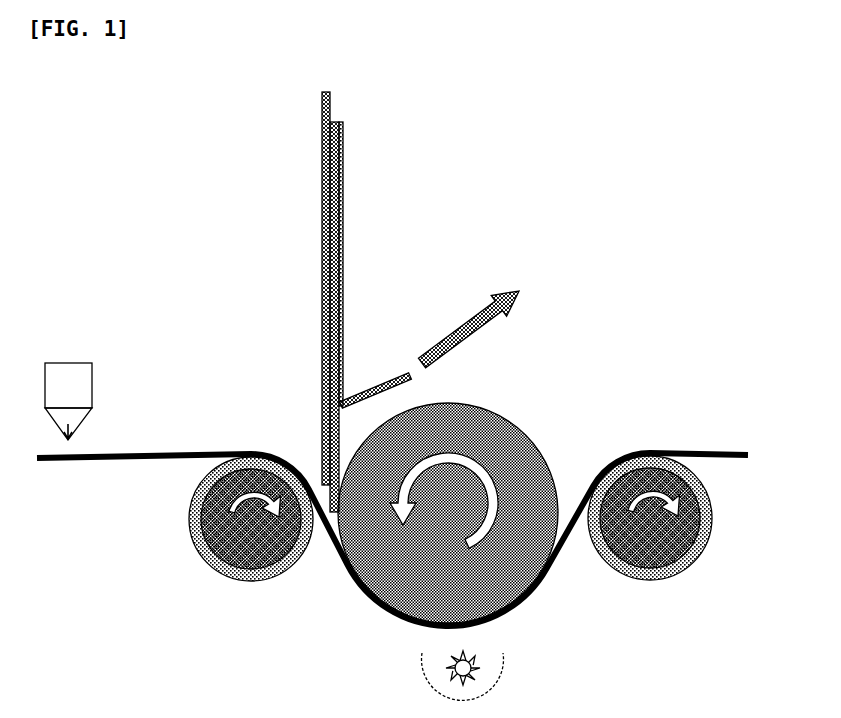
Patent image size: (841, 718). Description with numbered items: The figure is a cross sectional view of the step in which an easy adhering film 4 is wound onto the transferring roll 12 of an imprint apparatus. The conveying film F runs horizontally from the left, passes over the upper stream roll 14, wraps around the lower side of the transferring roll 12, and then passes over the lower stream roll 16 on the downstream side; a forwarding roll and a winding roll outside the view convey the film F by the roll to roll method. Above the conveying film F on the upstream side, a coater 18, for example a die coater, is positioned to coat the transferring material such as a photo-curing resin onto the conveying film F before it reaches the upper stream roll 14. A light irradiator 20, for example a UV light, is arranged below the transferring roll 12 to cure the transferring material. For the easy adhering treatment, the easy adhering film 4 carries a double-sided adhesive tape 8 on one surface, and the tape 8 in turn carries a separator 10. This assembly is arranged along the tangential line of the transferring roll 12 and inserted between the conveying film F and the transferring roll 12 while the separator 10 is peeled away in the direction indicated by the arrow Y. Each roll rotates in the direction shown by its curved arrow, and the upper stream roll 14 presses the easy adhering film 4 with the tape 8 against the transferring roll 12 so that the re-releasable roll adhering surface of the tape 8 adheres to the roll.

The easy adhering film 4 is at (328, 92).
The double-sided adhesive tape 8 is at (336, 123).
The separator 10 is at (343, 157).
The transferring roll 12 is at (470, 407).
The upper stream roll 14 is at (240, 557).
The lower stream roll 16 is at (670, 552).
The coater 18 is at (73, 363).
The light irradiator 20 is at (521, 677).
The conveying film F is at (118, 454).
The peeling direction arrow Y is at (468, 329).